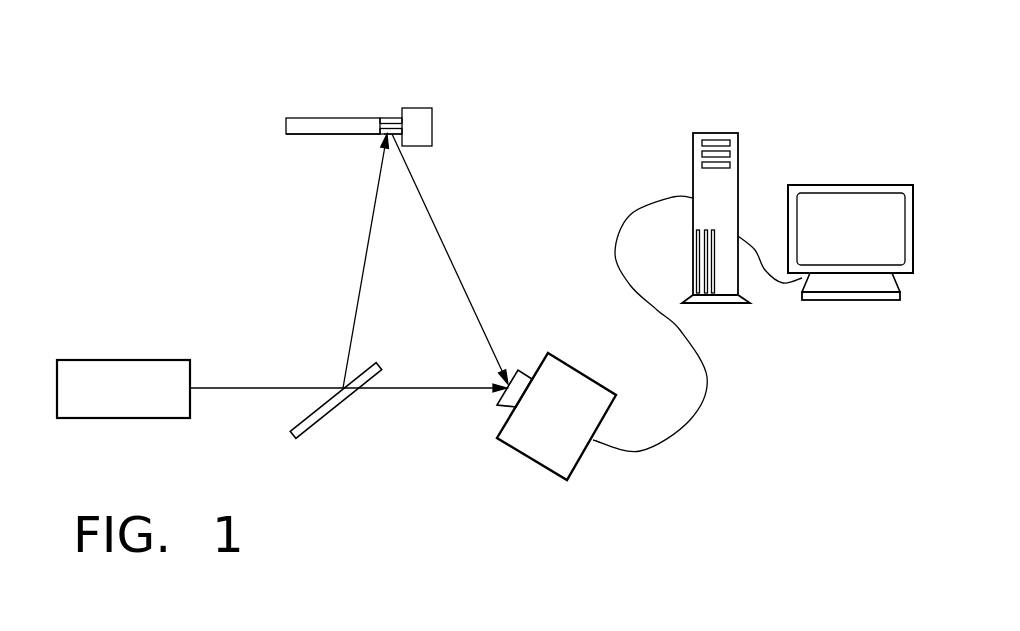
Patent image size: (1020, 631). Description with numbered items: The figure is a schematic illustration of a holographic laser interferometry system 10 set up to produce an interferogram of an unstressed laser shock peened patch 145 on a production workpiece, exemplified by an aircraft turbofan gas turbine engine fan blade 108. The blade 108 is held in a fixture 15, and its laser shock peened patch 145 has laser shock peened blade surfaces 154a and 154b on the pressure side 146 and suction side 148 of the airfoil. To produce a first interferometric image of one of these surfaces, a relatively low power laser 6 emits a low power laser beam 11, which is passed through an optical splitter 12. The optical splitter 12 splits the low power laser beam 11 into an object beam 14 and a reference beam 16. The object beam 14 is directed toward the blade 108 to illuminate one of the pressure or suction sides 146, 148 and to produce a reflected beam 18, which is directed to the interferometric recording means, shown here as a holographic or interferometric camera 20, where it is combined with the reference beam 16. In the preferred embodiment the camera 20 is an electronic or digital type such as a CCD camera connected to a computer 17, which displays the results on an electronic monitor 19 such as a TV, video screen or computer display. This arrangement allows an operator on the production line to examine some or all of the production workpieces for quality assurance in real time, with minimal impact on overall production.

The low power laser 6 is at (133, 401).
The holographic laser interferometry system 10 is at (202, 267).
The low power laser beam 11 is at (230, 387).
The optical splitter 12 is at (315, 425).
The object beam 14 is at (365, 263).
The fixture 15 is at (432, 123).
The reference beam 16 is at (398, 389).
The computer 17 is at (717, 133).
The reflected beam 18 is at (448, 260).
The monitor 19 is at (848, 185).
The holographic or interferometric camera 20 is at (582, 372).
The fan blade 108 is at (328, 84).
The laser shock peened patch 145 is at (396, 136).
The pressure side 146 is at (306, 135).
The suction side 148 is at (307, 117).
The laser shock peened blade surface 154a is at (381, 136).
The laser shock peened blade surface 154b is at (385, 118).